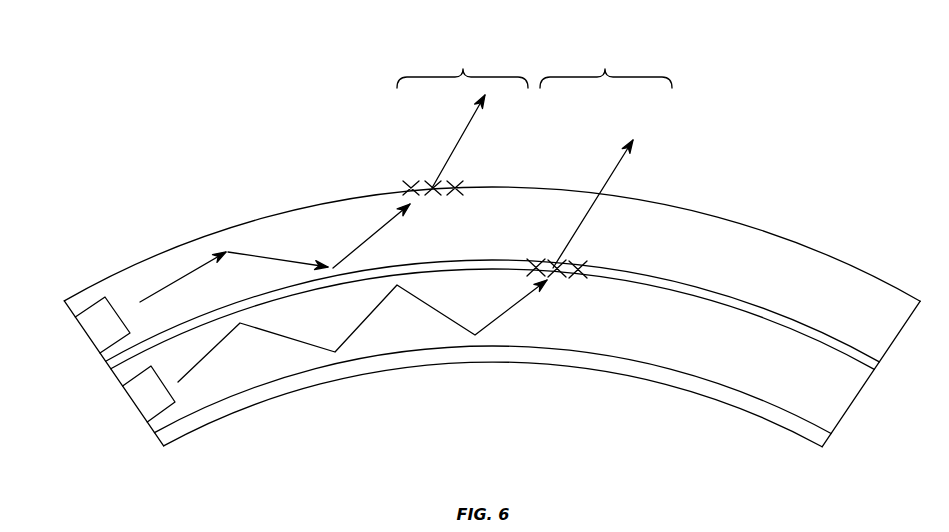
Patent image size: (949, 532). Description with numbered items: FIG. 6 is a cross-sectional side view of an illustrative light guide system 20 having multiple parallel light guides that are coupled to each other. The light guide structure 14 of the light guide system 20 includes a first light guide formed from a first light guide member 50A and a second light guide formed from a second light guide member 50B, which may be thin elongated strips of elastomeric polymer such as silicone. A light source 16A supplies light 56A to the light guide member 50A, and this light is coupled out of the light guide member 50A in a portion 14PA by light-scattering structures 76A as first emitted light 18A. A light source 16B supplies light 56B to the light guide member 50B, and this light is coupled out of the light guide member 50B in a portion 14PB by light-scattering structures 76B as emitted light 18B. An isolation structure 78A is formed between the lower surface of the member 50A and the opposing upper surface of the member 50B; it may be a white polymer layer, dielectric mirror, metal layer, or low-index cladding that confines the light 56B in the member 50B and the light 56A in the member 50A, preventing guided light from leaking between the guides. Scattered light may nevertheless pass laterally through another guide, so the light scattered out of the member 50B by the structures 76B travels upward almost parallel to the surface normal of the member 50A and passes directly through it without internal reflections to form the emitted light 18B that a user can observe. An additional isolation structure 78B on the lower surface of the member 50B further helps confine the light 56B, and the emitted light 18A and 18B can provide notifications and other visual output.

The light guide system 20 is at (288, 83).
The light guide structure 14 is at (775, 207).
The portion 14PA is at (462, 69).
The portion 14PB is at (606, 69).
The first light guide member 50A is at (848, 273).
The second light guide member 50B is at (840, 397).
The isolation structure 78A is at (867, 362).
The isolation structure 78B is at (717, 387).
The light source 16A is at (100, 333).
The light source 16B is at (147, 400).
The light 56A is at (180, 277).
The light 56B is at (210, 353).
The light-scattering structures 76A is at (433, 182).
The light-scattering structures 76B is at (573, 277).
The first emitted light 18A is at (470, 125).
The emitted light 18B is at (617, 167).